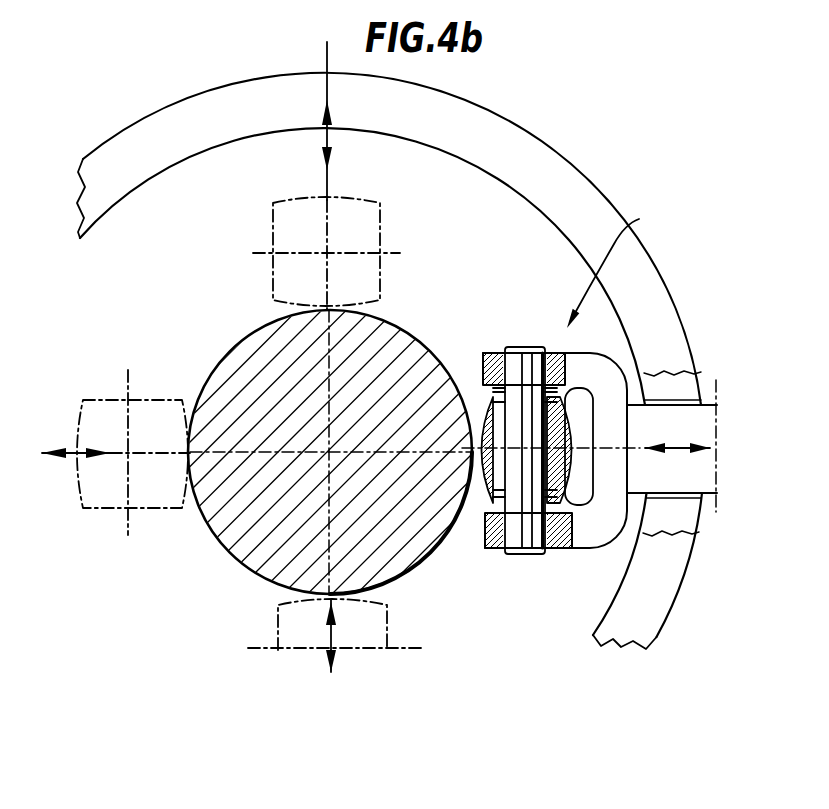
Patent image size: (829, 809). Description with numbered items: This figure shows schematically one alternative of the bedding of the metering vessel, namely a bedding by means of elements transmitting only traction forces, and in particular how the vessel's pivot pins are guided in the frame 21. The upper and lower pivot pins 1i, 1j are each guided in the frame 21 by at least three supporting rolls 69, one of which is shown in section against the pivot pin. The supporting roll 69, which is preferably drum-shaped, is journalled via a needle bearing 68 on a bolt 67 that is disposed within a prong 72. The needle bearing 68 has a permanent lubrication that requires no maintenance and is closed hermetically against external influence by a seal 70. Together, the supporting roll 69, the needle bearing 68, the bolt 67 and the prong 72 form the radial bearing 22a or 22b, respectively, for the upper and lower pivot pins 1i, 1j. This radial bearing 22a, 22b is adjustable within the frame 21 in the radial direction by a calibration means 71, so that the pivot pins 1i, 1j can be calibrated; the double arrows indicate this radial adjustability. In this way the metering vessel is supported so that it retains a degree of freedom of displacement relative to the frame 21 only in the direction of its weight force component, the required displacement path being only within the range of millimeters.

The frame 21 is at (648, 286).
The radial bearing 22a is at (642, 265).
The radial bearing 22b is at (642, 265).
The upper pivot pin 1i is at (337, 441).
The lower pivot pin 1j is at (386, 355).
The bolt 67 is at (537, 537).
The needle bearing 68 is at (607, 418).
The supporting roll 69 is at (577, 447).
The seal 70 is at (552, 500).
The calibration means 71 is at (682, 445).
The prong 72 is at (630, 408).